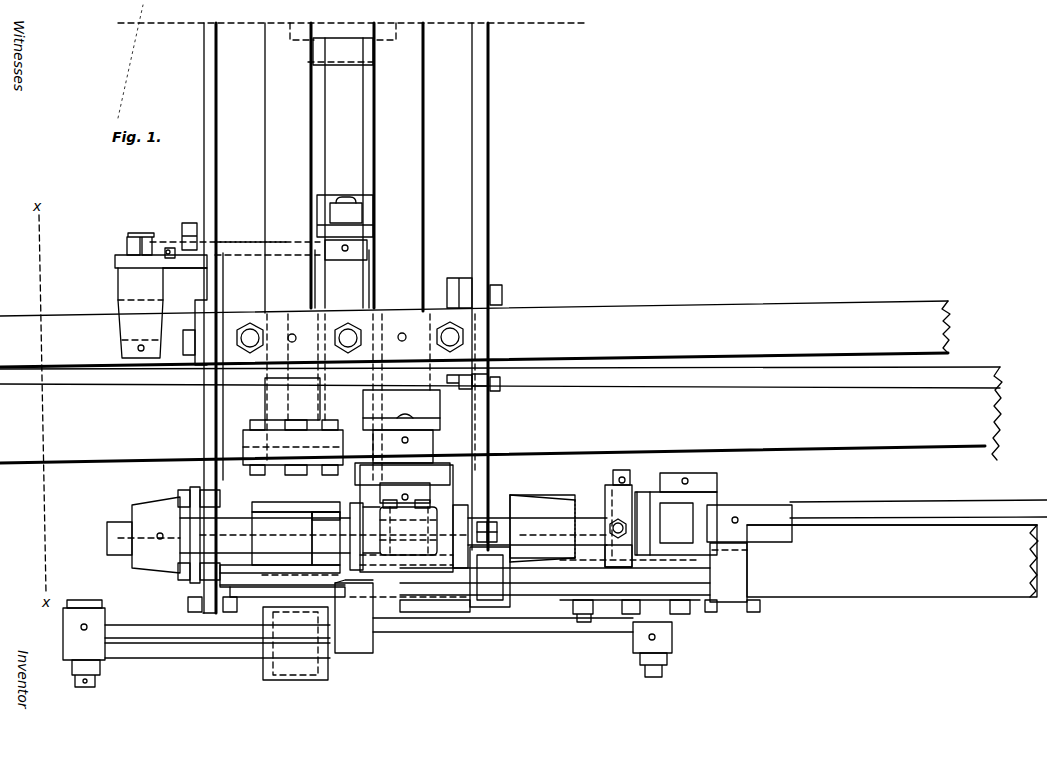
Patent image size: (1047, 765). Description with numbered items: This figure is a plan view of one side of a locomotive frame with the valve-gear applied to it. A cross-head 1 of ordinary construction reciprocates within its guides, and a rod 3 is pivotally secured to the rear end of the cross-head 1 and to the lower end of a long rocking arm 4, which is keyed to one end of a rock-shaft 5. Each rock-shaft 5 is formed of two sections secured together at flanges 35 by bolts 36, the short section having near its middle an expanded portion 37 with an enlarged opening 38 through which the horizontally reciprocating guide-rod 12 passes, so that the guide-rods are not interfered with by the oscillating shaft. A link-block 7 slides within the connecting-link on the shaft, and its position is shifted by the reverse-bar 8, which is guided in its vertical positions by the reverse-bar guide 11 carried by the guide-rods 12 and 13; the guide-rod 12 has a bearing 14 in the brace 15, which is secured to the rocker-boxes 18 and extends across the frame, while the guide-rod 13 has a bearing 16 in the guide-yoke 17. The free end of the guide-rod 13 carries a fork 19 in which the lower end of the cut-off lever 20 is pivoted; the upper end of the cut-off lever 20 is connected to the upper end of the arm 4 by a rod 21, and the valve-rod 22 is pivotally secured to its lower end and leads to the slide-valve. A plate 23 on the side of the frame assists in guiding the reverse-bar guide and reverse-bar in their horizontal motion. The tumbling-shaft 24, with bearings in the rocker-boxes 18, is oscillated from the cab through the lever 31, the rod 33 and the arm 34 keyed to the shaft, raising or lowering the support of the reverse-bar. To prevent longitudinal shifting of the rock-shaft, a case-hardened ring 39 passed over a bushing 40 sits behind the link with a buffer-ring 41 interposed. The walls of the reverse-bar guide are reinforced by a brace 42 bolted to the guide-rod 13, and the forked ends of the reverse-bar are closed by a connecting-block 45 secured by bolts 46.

The cross-head 1 is at (610, 607).
The rod 3 is at (415, 629).
The long rocking arm 4 is at (195, 652).
The rock-shaft 5 is at (268, 158).
The link-block 7 is at (420, 490).
The reverse-bar 8 is at (381, 544).
The reverse-bar guide 11 is at (360, 513).
The guide-rod 12 is at (118, 528).
The guide-rod 13 is at (598, 547).
The bearing 14 is at (165, 505).
The brace 15 is at (210, 410).
The bearing 16 is at (548, 501).
The guide-yoke 17 is at (489, 232).
The rocker-box 18 is at (356, 397).
The fork 19 is at (642, 486).
The cut-off lever 20 is at (722, 497).
The rod 21 is at (548, 588).
The valve-rod 22 is at (848, 499).
The plate 23 is at (430, 592).
The tumbling-shaft 24 is at (343, 165).
The lever 31 is at (125, 281).
The rod 33 is at (255, 254).
The arm 34 is at (370, 226).
The flange 35 is at (248, 446).
The bolt 36 is at (258, 424).
The expanded portion 37 is at (292, 505).
The enlarged opening 38 is at (262, 557).
The case-hardened ring 39 is at (440, 410).
The bushing 40 is at (383, 380).
The buffer-ring 41 is at (440, 431).
The brace 42 is at (537, 531).
The connecting-block 45 is at (408, 531).
The bolt 46 is at (386, 498).